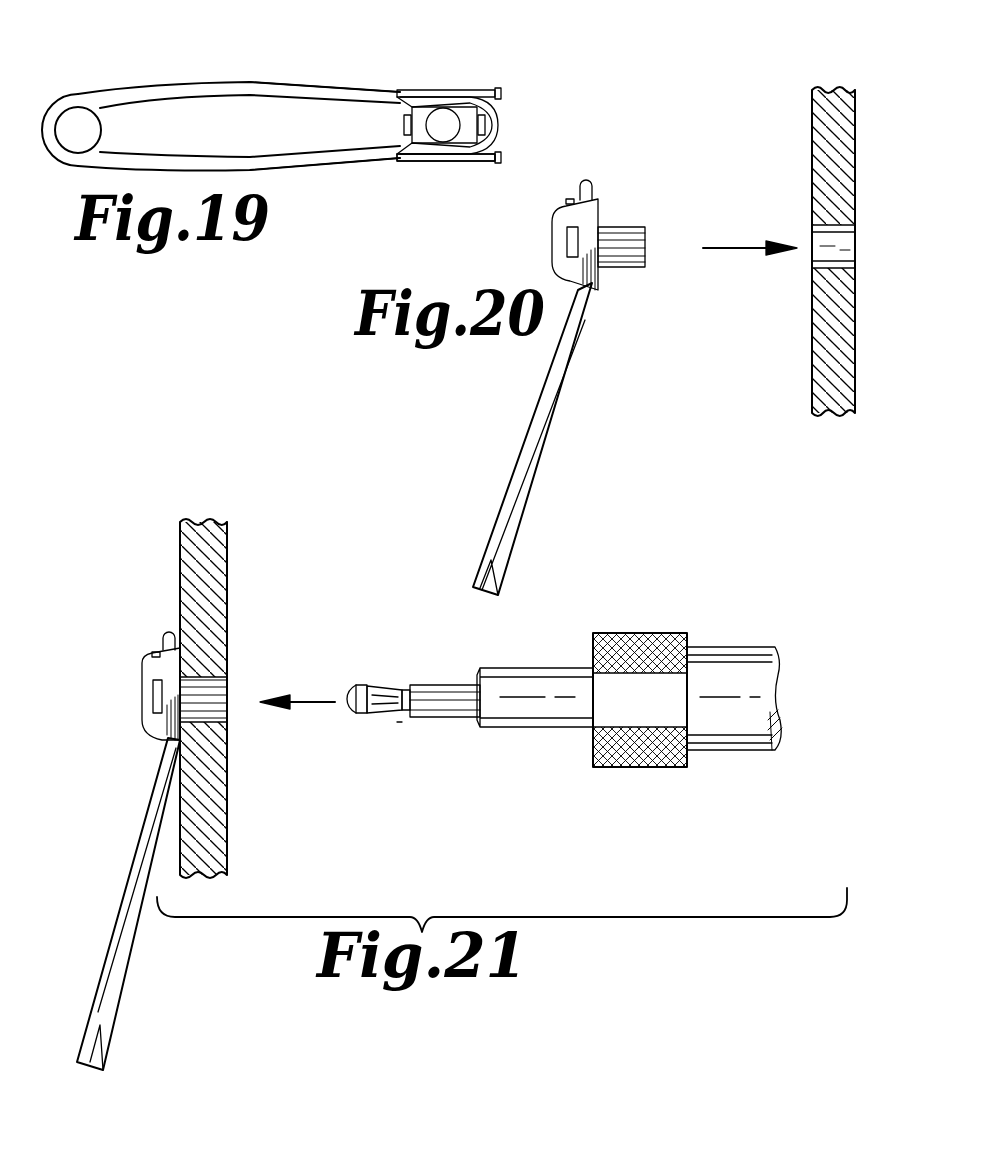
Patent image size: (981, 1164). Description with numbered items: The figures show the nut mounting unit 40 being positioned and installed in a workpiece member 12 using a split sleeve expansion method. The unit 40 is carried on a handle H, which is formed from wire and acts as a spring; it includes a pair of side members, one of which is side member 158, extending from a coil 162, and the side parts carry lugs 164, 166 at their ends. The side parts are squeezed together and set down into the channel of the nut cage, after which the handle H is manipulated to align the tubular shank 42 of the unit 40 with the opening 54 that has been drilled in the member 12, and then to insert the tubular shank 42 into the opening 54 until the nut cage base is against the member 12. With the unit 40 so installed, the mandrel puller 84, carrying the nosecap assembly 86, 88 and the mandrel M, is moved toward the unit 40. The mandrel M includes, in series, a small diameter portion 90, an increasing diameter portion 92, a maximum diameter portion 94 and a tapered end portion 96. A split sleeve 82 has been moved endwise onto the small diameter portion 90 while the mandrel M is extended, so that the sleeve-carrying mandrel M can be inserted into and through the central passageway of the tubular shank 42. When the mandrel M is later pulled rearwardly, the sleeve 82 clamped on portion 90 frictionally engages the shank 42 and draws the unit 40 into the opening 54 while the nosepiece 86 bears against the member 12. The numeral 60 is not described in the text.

In FIG. 19, the side member 158 is at (352, 90).
In FIG. 19, the lug 164 is at (501, 95).
In FIG. 19, the lug 166 is at (501, 153).
In FIG. 19, the lower handle arm 60 is at (358, 162).
In FIG. 19, the coil 162 is at (60, 168).
In FIG. 19, the handle H is at (312, 172).
In FIG. 20, the handle H is at (563, 422).
In FIG. 21, the handle H is at (113, 910).
In FIG. 20, the nut mounting unit 40 is at (546, 275).
In FIG. 21, the nut mounting unit 40 is at (143, 672).
In FIG. 20, the tubular shank 42 is at (636, 228).
In FIG. 21, the tubular shank 42 is at (205, 718).
In FIG. 20, the member 12 is at (832, 140).
In FIG. 20, the opening 54 is at (830, 248).
In FIG. 21, the tapered end portion 96 is at (350, 688).
In FIG. 21, the increasing diameter portion 92 is at (380, 690).
In FIG. 21, the split sleeve 82 is at (436, 700).
In FIG. 21, the maximum diameter portion 94 is at (365, 718).
In FIG. 21, the mandrel M is at (397, 727).
In FIG. 21, the small diameter portion 90 is at (405, 712).
In FIG. 21, the nosecap assembly 88 is at (642, 635).
In FIG. 21, the nosepiece 86 is at (543, 712).
In FIG. 21, the mandrel puller 84 is at (722, 735).